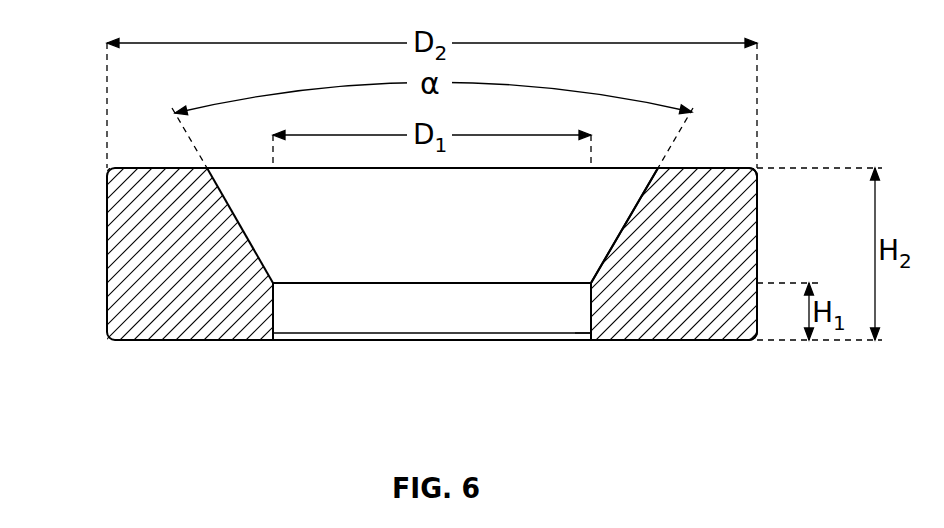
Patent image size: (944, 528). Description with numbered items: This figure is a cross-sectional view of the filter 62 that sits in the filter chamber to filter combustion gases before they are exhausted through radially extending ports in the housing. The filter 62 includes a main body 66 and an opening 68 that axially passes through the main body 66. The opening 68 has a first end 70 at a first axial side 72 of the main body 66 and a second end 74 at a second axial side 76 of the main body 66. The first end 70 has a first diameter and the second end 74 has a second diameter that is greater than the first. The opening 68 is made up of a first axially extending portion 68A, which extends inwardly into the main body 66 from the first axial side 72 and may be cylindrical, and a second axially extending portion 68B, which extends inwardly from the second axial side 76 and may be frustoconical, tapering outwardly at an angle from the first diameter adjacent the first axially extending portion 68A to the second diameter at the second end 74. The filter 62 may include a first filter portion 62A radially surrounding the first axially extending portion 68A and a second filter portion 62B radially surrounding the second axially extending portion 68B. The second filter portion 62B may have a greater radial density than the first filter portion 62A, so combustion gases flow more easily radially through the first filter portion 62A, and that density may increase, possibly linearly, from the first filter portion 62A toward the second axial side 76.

The filter 62 is at (104, 371).
The first filter portion 62A is at (274, 305).
The second filter portion 62B is at (158, 208).
The main body 66 is at (680, 310).
The opening 68 is at (358, 320).
The first axially extending portion 68A is at (588, 303).
The second axially extending portion 68B is at (232, 210).
The first end 70 is at (590, 328).
The first axial side 72 is at (152, 342).
The second end 74 is at (632, 210).
The second axial side 76 is at (142, 167).